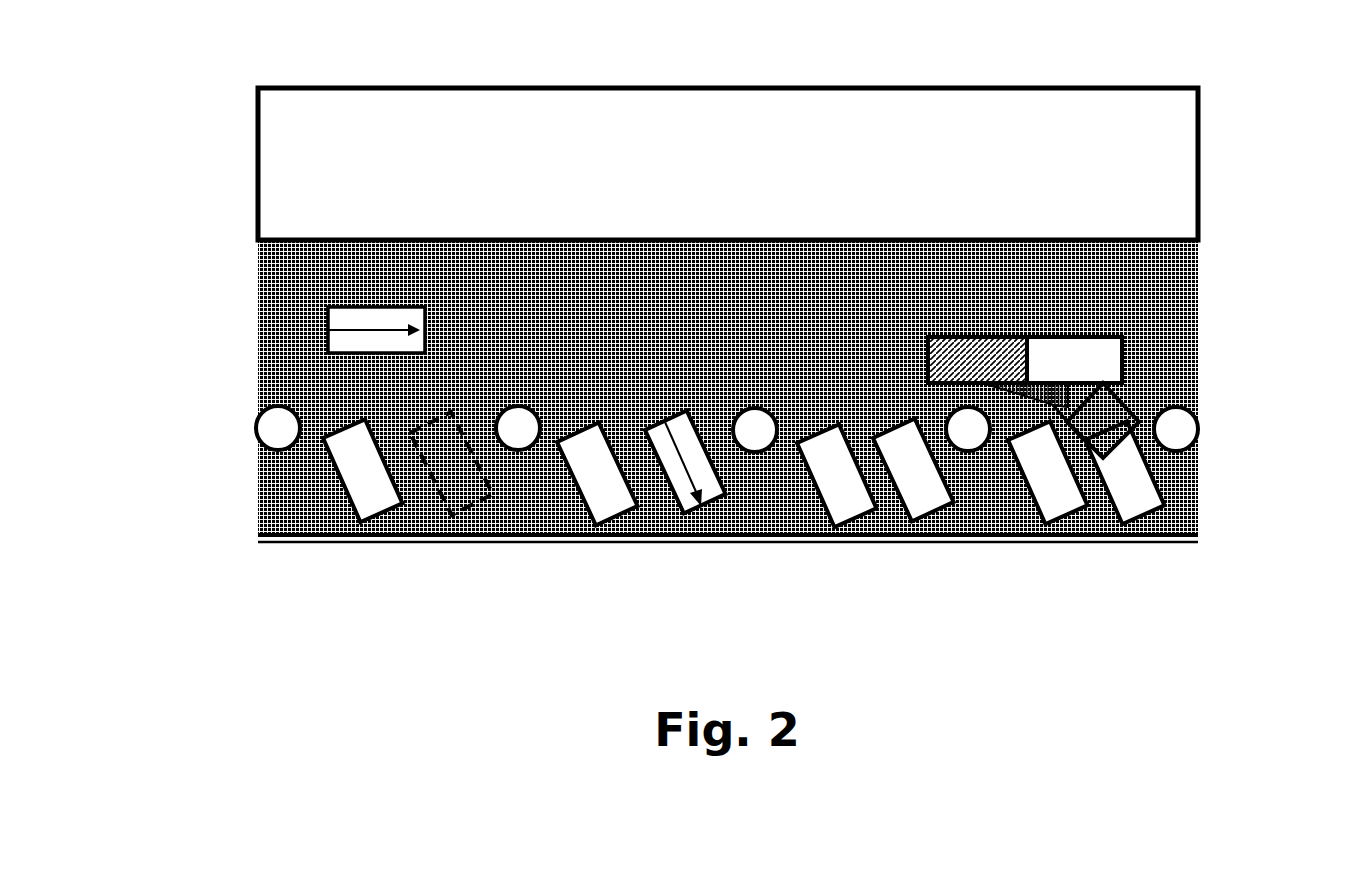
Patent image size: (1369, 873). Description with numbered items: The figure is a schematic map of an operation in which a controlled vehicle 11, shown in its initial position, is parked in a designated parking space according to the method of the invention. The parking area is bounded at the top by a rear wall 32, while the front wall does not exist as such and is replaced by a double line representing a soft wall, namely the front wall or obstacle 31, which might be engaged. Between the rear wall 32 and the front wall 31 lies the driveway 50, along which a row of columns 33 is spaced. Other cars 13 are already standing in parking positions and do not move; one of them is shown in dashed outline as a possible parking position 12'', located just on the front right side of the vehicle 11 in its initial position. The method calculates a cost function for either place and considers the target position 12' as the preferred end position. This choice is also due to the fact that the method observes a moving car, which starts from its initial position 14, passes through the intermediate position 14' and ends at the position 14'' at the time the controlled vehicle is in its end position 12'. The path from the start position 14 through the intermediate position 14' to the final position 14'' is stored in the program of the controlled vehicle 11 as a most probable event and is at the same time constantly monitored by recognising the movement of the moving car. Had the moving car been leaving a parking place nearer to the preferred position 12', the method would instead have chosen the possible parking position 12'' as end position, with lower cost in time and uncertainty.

The vehicle 11 is at (328, 330).
The vehicle target position 12' is at (706, 521).
The possible parking position 12'' is at (470, 521).
The other cars 13 is at (383, 521).
The other car, moving, start position 14 is at (1129, 507).
The other car, moving, intermediate position 14' is at (1132, 339).
The other car, moving, position at target position of controlled car 14'' is at (1186, 338).
The front wall/obstacle 31 is at (1197, 542).
The rear wall/obstacle 32 is at (620, 103).
The column 33 is at (257, 430).
The driveway 50 is at (277, 257).